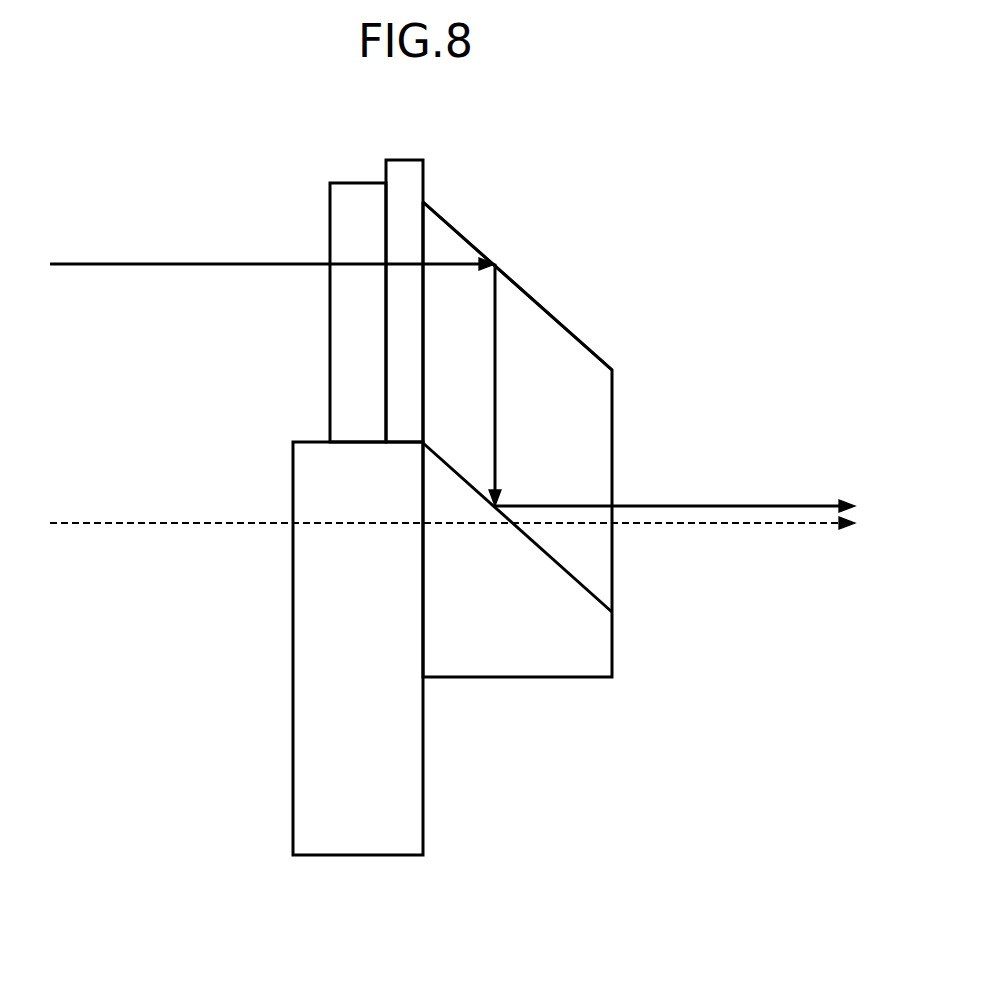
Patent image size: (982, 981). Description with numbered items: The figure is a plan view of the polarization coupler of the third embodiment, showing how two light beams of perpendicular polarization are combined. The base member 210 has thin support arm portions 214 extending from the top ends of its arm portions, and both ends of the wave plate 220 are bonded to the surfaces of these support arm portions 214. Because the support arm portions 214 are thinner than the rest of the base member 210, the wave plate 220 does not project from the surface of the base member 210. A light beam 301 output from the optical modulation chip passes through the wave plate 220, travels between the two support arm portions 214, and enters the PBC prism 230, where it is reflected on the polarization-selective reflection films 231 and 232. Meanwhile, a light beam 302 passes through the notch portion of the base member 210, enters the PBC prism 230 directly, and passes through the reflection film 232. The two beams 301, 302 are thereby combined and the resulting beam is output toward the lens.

The base member 210 is at (357, 857).
The support arm portions 214 is at (409, 160).
The wave plate 220 is at (358, 183).
The PBC prism 230 is at (520, 678).
The reflection film 231 is at (553, 315).
The reflection film 232 is at (543, 552).
The light beam 301 is at (89, 263).
The light beam 302 is at (89, 522).